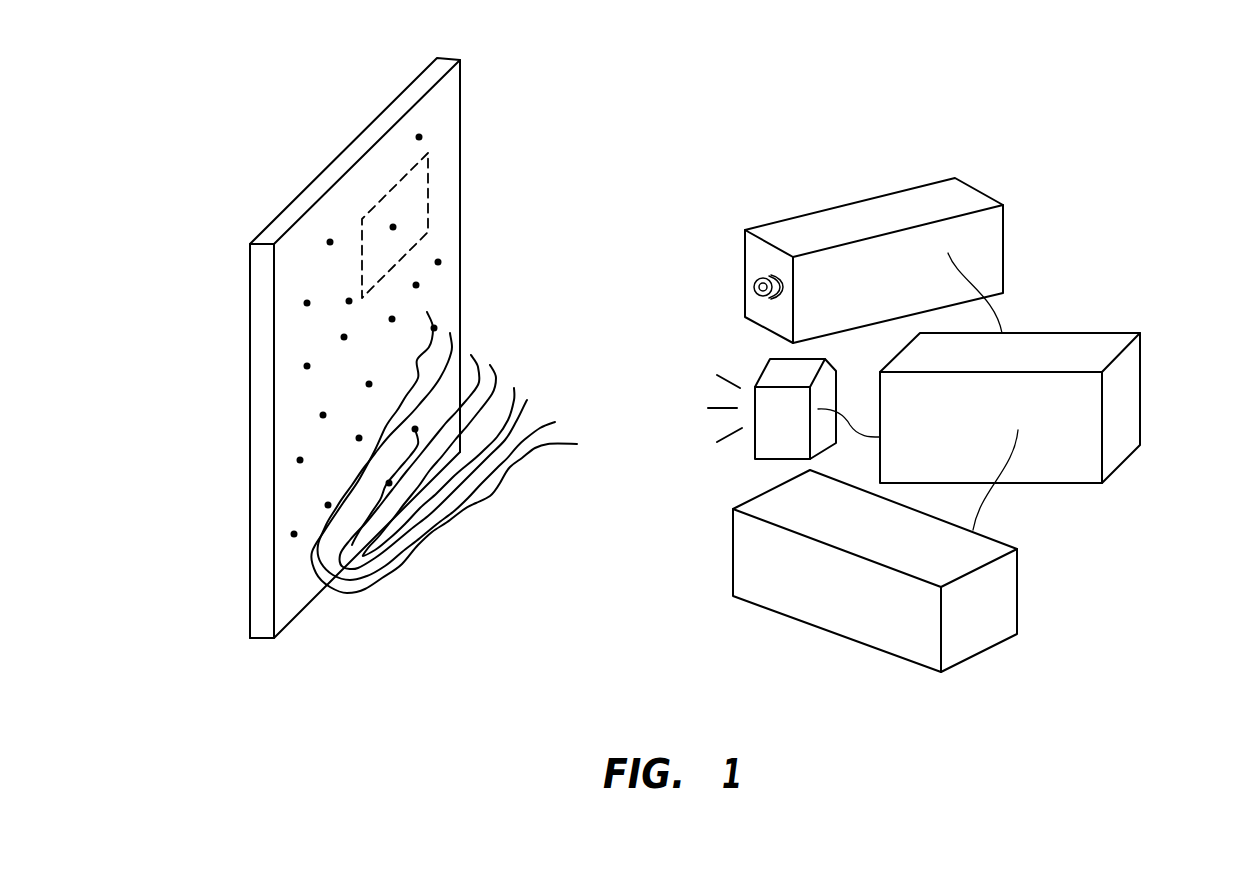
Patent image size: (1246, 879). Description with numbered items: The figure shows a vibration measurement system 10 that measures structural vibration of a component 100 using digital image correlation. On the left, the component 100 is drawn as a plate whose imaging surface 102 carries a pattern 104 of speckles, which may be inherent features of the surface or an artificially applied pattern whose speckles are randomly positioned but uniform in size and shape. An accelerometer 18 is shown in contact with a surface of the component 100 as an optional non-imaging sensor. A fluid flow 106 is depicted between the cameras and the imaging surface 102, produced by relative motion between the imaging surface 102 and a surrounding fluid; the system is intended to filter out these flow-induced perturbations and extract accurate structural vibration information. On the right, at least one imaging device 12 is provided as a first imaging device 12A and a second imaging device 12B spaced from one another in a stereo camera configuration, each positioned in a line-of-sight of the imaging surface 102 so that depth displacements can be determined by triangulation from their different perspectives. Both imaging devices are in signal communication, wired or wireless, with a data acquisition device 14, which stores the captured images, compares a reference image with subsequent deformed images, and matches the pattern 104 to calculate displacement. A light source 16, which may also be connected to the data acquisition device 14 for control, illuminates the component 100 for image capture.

The vibration measurement system 10 is at (1128, 205).
The imaging device 12 is at (863, 170).
The first imaging device 12A is at (912, 187).
The second imaging device 12B is at (887, 655).
The data acquisition device 14 is at (1142, 388).
The light source 16 is at (755, 448).
The accelerometer 18 is at (393, 183).
The component 100 is at (228, 399).
The imaging surface 102 is at (290, 258).
The pattern 104 is at (333, 333).
The fluid flow 106 is at (487, 527).